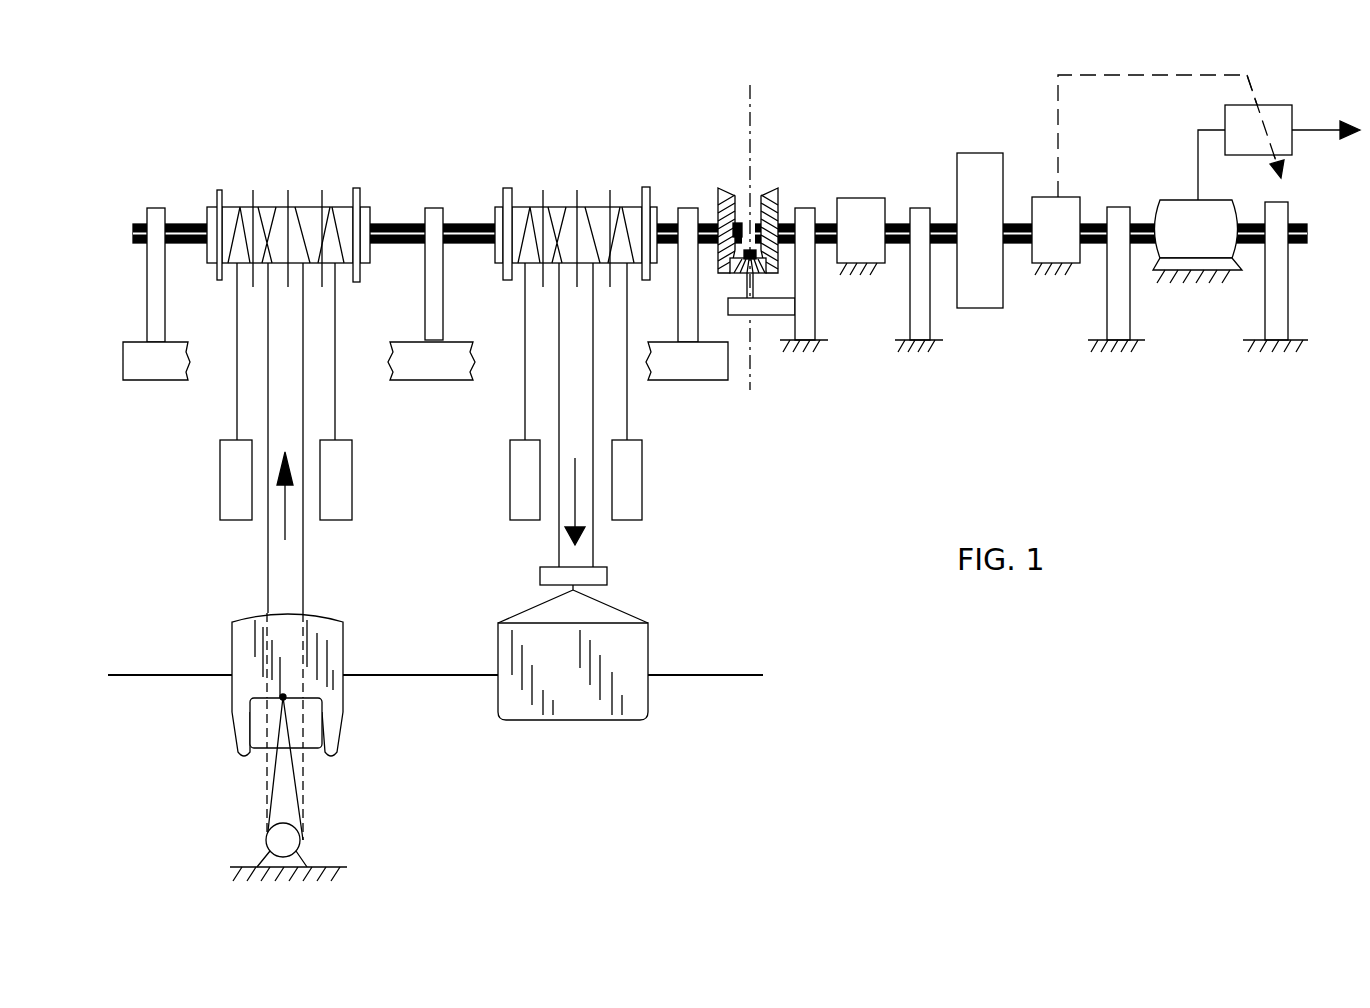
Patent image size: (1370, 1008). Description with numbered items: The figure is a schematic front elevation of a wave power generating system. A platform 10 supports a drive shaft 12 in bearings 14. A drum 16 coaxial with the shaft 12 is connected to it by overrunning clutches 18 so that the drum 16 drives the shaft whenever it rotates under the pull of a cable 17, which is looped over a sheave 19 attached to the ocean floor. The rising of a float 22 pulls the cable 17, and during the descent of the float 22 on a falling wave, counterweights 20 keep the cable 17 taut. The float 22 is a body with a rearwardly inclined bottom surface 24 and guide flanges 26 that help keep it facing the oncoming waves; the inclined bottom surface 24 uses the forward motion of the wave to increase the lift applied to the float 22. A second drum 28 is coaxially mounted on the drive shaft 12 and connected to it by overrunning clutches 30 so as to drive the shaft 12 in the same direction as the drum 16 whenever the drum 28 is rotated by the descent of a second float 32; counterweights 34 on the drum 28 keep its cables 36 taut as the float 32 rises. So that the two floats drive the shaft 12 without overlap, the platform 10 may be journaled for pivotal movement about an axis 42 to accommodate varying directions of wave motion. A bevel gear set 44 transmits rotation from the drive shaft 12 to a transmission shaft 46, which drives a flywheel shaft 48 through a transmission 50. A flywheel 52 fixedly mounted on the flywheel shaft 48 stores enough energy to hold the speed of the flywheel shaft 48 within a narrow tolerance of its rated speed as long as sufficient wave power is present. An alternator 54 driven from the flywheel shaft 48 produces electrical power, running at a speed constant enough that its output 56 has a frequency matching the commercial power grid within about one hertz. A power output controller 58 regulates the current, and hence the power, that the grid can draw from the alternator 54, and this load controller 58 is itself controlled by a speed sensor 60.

The platform 10 is at (148, 373).
The drive shaft 12 is at (183, 230).
The bearings 14 is at (155, 222).
The drum 16 is at (274, 188).
The cable 17 is at (303, 365).
The overrunning clutches 18 is at (219, 198).
The sheave 19 is at (283, 843).
The counterweights 20 is at (222, 506).
The float 22 is at (240, 648).
The rearwardly inclined bottom surface 24 is at (310, 748).
The guide flanges 26 is at (243, 735).
The second drum 28 is at (553, 188).
The overrunning clutches 30 is at (503, 205).
The float 32 is at (568, 710).
The counterweights 34 is at (512, 495).
The cables 36 is at (593, 365).
The axis 42 is at (751, 146).
The bevel gear set 44 is at (778, 168).
The transmission shaft 46 is at (827, 215).
The flywheel shaft 48 is at (897, 217).
The transmission 50 is at (865, 210).
The flywheel 52 is at (975, 153).
The alternator 54 is at (1165, 205).
The output 56 is at (1318, 125).
The power output controller 58 is at (1272, 110).
The speed sensor 60 is at (1063, 197).